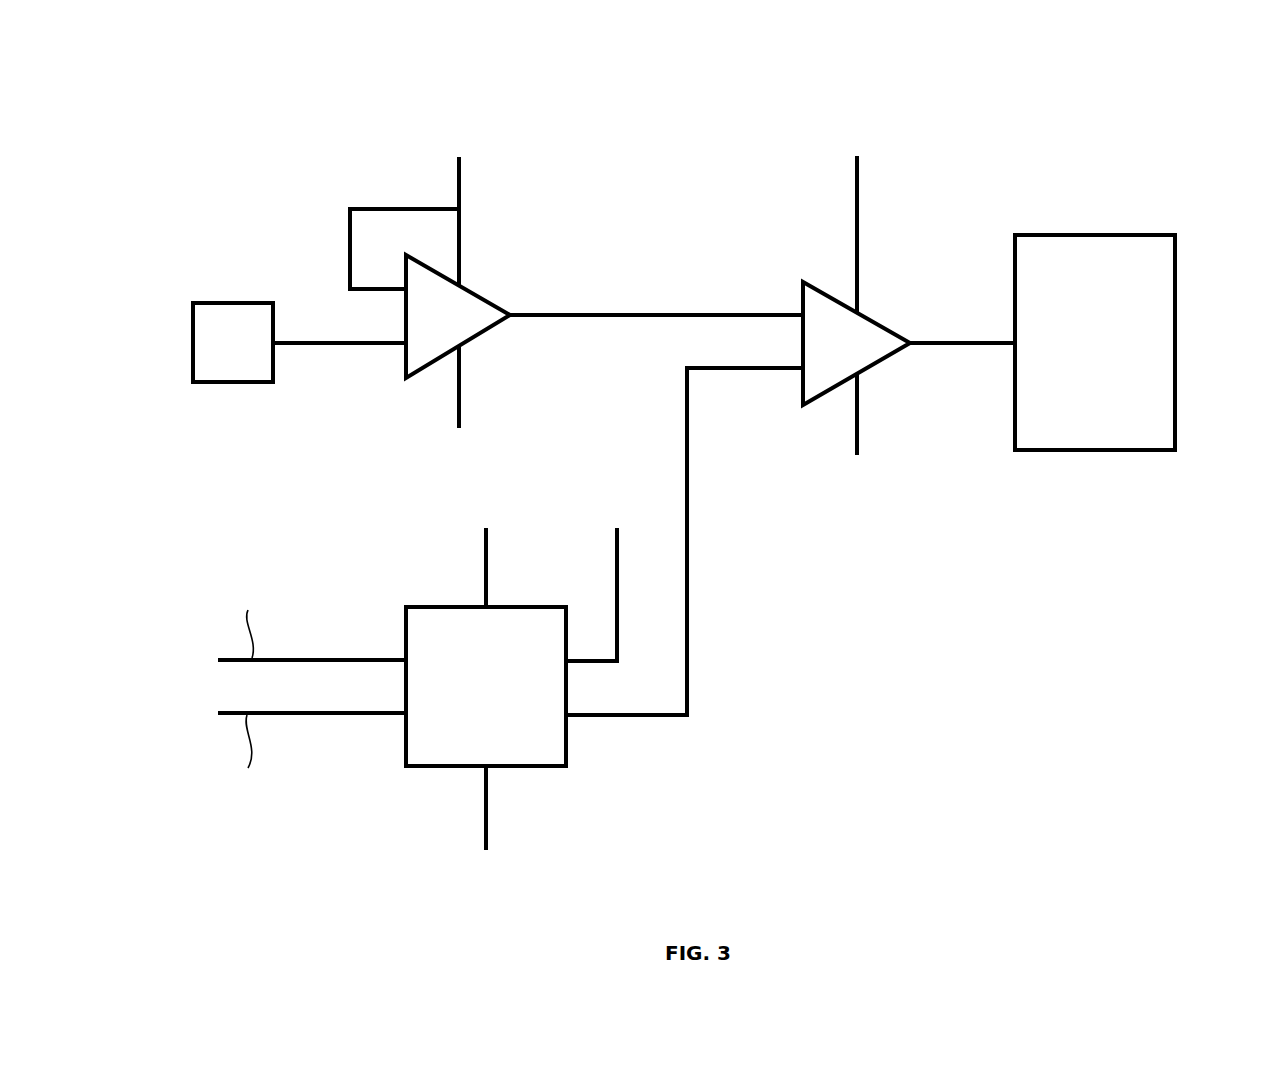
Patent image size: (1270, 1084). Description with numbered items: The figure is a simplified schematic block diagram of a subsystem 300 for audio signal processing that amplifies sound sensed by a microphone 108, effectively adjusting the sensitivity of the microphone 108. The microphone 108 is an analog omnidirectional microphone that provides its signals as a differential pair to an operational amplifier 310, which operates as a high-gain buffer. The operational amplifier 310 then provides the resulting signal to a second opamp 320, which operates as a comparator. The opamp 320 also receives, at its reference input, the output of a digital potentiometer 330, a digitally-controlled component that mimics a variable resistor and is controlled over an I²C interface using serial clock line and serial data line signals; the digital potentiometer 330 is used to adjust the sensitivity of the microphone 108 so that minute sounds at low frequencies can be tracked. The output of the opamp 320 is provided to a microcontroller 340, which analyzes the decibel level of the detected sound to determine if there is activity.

The subsystem 300 is at (1245, 100).
The microphone 108 is at (212, 355).
The operational amplifier 310 is at (438, 329).
The opamp 320 is at (836, 354).
The digital potentiometer 330 is at (465, 697).
The microcontroller 340 is at (1072, 355).